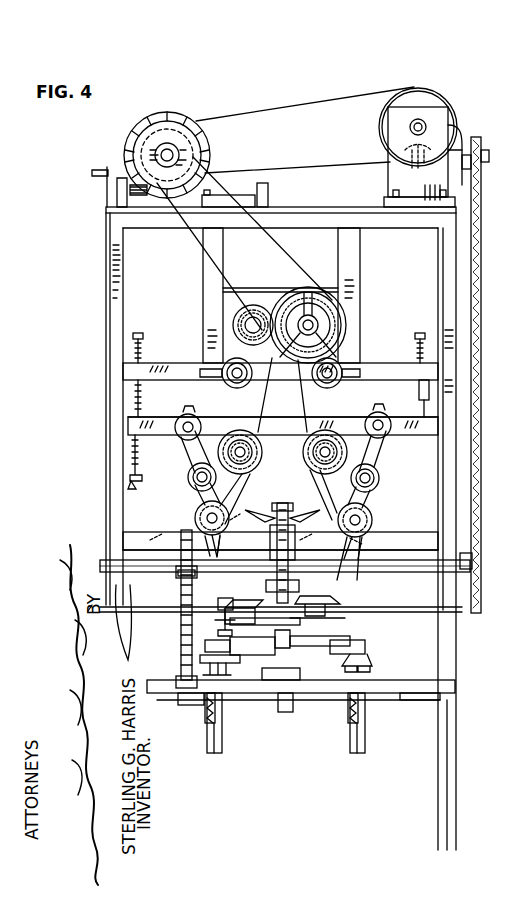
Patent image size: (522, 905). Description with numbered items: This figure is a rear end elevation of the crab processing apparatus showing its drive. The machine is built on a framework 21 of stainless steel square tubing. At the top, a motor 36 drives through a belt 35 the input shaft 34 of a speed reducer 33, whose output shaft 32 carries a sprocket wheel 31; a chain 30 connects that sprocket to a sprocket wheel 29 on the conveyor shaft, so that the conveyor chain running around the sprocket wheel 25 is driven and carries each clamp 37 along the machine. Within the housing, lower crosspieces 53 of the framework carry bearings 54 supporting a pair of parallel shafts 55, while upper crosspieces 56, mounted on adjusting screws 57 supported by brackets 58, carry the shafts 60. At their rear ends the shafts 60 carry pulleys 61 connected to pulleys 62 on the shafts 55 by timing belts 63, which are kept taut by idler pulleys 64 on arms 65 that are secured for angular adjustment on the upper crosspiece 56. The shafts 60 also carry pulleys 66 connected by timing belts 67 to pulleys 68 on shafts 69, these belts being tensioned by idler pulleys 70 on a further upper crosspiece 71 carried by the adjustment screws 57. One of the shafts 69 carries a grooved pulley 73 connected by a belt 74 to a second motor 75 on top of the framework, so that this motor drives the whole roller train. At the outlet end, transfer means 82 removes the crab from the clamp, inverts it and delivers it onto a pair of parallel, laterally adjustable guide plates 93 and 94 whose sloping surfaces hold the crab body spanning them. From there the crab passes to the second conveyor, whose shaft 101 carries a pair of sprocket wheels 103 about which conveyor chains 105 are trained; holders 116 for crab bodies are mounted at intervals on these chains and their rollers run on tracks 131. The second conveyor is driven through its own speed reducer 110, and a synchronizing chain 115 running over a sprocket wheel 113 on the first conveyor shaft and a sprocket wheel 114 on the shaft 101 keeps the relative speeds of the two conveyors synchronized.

The framework 21 is at (105, 321).
The sprocket wheel 25 is at (264, 571).
The sprocket wheel 29 is at (482, 604).
The chain 30 is at (481, 212).
The sprocket wheel 31 is at (462, 146).
The output shaft 32 is at (480, 157).
The speed reducer 33 is at (404, 148).
The input shaft 34 is at (440, 110).
The belt 35 is at (305, 127).
The motor 36 is at (187, 118).
The clamp 37 is at (273, 620).
The lower crosspieces 53 is at (430, 537).
The bearings 54 is at (182, 529).
The shafts 55 is at (214, 522).
The upper crosspieces 56 is at (139, 427).
The adjusting screws 57 is at (136, 335).
The brackets 58 is at (135, 483).
The shafts 60 is at (322, 452).
The pulleys 61 is at (314, 452).
The pulleys 62 is at (372, 513).
The timing belts 63 is at (195, 500).
The idler pulleys 64 is at (189, 478).
The arms 65 is at (188, 450).
The pulleys 66 is at (238, 431).
The timing belts 67 is at (218, 400).
The pulleys 68 is at (235, 318).
The shafts 69 is at (300, 287).
The idler pulleys 70 is at (225, 365).
The upper crosspiece 71 is at (412, 366).
The grooved pulley 73 is at (346, 309).
The belt 74 is at (275, 237).
The motor 75 is at (150, 140).
The transfer means 82 is at (375, 640).
The guide plate 93 is at (224, 622).
The guide plate 94 is at (341, 618).
The shaft 101 is at (388, 698).
The sprocket wheels 103 is at (205, 708).
The conveyor chains 105 is at (222, 738).
The speed reducer 110 is at (140, 565).
The sprocket wheel 113 is at (182, 573).
The sprocket wheel 114 is at (182, 677).
The synchronizing chain 115 is at (181, 637).
The holders 116 is at (257, 670).
The tracks 131 is at (283, 680).